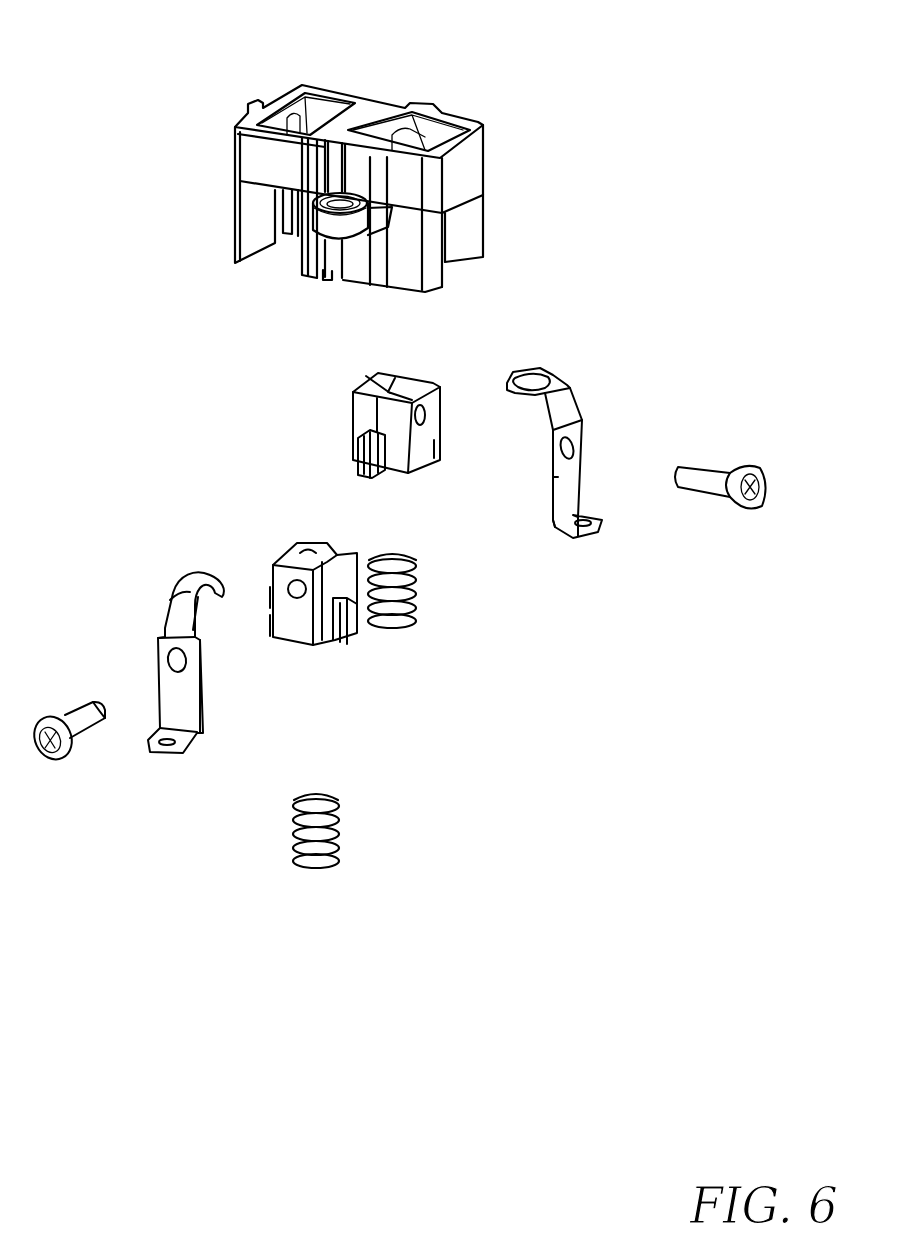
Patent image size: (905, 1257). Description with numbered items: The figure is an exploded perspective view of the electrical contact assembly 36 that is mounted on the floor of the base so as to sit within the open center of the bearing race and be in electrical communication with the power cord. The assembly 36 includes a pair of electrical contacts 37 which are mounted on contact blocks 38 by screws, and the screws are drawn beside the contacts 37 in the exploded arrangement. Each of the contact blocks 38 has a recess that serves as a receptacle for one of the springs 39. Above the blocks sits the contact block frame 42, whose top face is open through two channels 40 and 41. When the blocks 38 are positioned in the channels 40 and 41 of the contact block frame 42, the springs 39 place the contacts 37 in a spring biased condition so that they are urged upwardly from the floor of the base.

The electrical contact assembly 36 is at (607, 222).
The electrical contacts 37 is at (572, 392).
The contact blocks 38 is at (367, 380).
The springs 39 is at (420, 573).
The channel 40 is at (317, 107).
The channel 41 is at (427, 130).
The contact block frame 42 is at (465, 170).